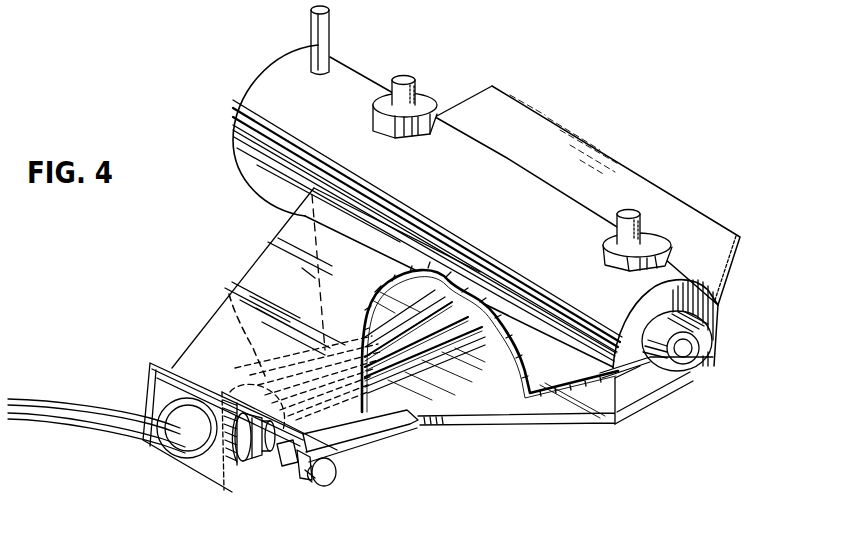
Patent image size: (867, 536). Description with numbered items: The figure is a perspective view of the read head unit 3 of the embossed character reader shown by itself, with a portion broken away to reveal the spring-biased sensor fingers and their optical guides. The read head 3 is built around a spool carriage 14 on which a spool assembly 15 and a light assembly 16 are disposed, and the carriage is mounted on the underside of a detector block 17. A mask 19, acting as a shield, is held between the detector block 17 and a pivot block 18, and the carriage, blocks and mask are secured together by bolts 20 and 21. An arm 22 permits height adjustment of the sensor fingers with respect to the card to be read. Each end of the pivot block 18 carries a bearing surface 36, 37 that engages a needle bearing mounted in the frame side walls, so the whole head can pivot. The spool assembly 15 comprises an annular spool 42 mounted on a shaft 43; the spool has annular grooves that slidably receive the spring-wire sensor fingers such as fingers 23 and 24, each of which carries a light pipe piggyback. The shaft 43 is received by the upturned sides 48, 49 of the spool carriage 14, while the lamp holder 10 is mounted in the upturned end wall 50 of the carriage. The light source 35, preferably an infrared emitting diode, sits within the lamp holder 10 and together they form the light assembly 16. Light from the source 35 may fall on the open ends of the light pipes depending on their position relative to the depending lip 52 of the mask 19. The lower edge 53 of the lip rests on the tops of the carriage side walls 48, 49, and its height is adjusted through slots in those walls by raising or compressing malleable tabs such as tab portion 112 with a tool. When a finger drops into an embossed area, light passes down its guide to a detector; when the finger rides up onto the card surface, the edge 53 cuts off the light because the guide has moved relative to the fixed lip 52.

The read head unit 3 is at (348, 56).
The lamp holder 10 is at (200, 407).
The spool carriage 14 is at (487, 423).
The spool assembly 15 is at (273, 488).
The light assembly 16 is at (194, 471).
The detector block 17 is at (640, 386).
The pivot block 18 is at (486, 228).
The mask 19 is at (326, 278).
The bolt 20 is at (658, 230).
The bolt 21 is at (418, 98).
The arm 22 is at (312, 43).
The sensor finger 23 is at (255, 462).
The sensor finger 24 is at (240, 470).
The light source 35 is at (190, 443).
The bearing surface 36 is at (583, 531).
The bearing surface 37 is at (710, 322).
The annular spool 42 is at (262, 482).
The shaft 43 is at (330, 472).
The upturned side 48 is at (387, 437).
The upturned side 49 is at (226, 293).
The upturned end wall 50 is at (182, 424).
The depending lip 52 is at (177, 360).
The lower edge 53 is at (296, 485).
The tab portion 112 is at (306, 478).